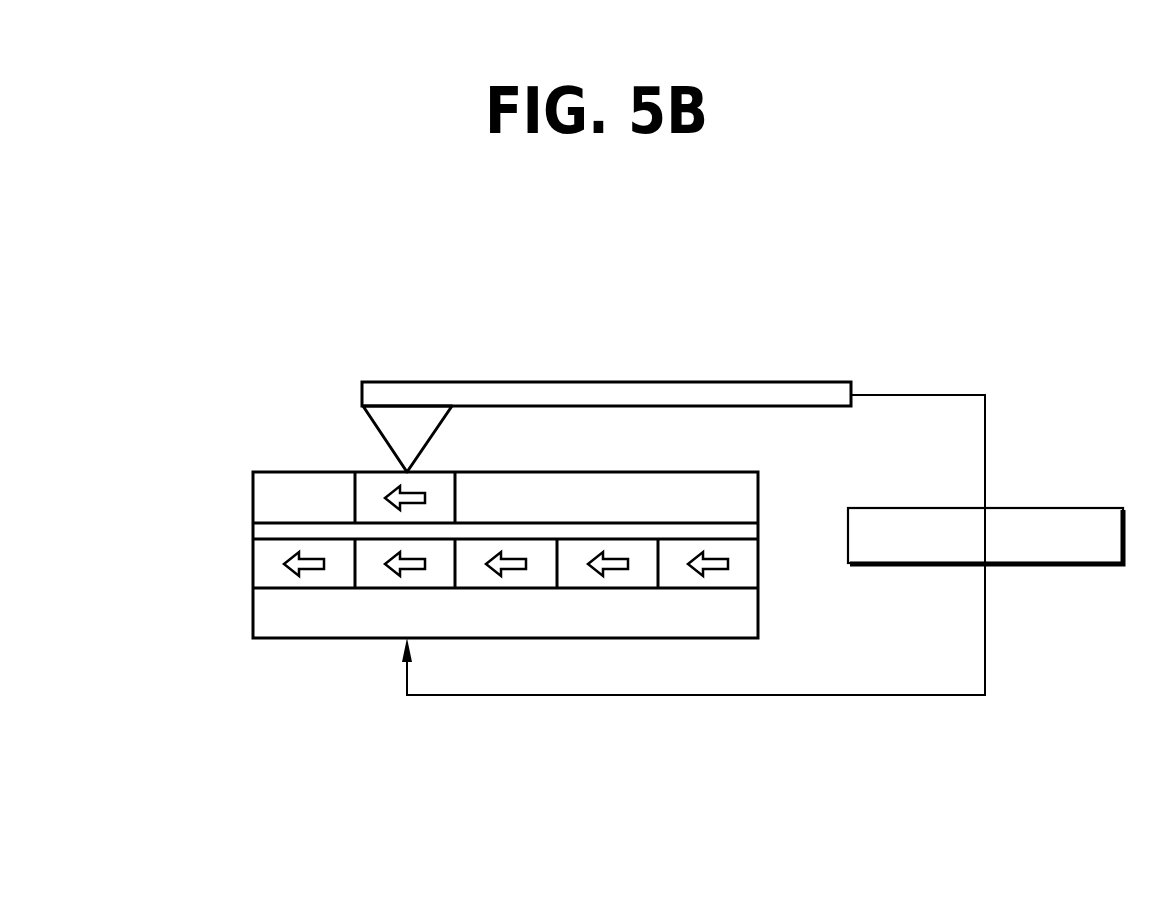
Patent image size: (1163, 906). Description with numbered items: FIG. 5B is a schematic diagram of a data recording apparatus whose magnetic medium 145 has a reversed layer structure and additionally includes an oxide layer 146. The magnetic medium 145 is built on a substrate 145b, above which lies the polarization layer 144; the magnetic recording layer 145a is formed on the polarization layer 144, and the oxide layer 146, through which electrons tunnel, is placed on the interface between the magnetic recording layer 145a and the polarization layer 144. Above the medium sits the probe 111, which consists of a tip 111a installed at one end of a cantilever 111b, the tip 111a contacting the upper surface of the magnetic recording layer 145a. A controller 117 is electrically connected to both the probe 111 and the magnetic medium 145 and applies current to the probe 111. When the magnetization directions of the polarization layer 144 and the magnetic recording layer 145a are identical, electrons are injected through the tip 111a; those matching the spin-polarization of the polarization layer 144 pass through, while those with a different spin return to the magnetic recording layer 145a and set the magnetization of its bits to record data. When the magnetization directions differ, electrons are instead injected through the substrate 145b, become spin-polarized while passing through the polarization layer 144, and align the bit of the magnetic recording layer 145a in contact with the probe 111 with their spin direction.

The probe 111 is at (530, 382).
The tip 111a is at (390, 434).
The cantilever 111b is at (482, 393).
The controller 117 is at (1065, 508).
The polarization layer 144 is at (253, 566).
The magnetic medium 145 is at (392, 555).
The magnetic recording layer 145a is at (253, 497).
The substrate 145b is at (253, 615).
The oxide layer 146 is at (253, 531).